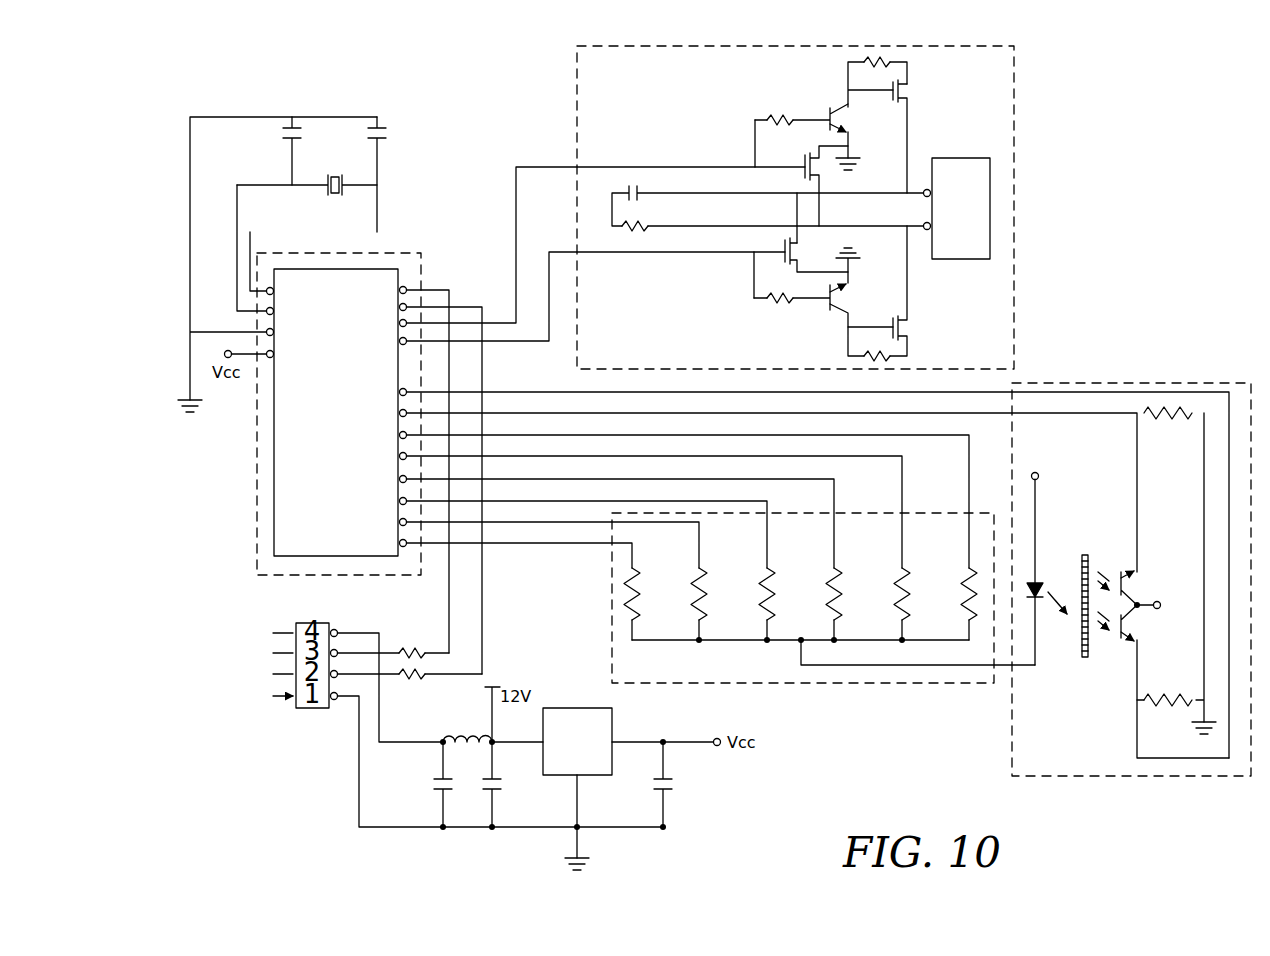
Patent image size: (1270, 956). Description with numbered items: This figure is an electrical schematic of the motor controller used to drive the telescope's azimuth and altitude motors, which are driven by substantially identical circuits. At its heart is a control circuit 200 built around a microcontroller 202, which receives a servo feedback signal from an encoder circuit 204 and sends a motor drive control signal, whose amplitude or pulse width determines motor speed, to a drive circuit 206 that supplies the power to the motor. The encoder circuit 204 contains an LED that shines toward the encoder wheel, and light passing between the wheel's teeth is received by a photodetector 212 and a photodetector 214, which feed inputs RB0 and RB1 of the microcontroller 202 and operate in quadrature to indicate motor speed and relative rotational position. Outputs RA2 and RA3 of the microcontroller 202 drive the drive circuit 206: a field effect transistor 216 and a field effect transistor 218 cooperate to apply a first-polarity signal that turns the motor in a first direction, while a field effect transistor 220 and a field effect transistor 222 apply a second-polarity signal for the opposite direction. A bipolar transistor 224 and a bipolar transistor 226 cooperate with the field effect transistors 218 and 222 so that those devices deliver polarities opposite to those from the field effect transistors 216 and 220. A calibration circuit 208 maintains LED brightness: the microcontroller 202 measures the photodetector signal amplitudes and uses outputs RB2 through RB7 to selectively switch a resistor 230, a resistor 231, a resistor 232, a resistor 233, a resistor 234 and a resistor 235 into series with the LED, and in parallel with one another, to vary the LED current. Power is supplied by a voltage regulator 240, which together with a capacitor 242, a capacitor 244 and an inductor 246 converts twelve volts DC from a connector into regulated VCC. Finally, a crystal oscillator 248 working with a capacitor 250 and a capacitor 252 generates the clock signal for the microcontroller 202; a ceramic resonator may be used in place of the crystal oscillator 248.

The control circuit 200 is at (257, 565).
The microcontroller 202 is at (368, 557).
The encoder circuit 204 is at (1100, 579).
The drive circuit 206 is at (575, 108).
The calibration circuit 208 is at (797, 616).
The photodetector 212 is at (1137, 580).
The photodetector 214 is at (1137, 626).
The field effect transistor 216 is at (800, 160).
The field effect transistor 218 is at (910, 90).
The field effect transistor 220 is at (785, 250).
The field effect transistor 222 is at (910, 336).
The bipolar transistor 224 is at (843, 106).
The bipolar transistor 226 is at (838, 306).
The resistor 230 is at (625, 598).
The resistor 231 is at (688, 592).
The resistor 232 is at (752, 595).
The resistor 233 is at (820, 592).
The resistor 234 is at (890, 590).
The resistor 235 is at (960, 590).
The voltage regulator 240 is at (614, 762).
The capacitor 242 is at (432, 786).
The capacitor 244 is at (505, 786).
The inductor 246 is at (478, 738).
The crystal oscillator 248 is at (335, 195).
The capacitor 250 is at (285, 130).
The capacitor 252 is at (385, 132).